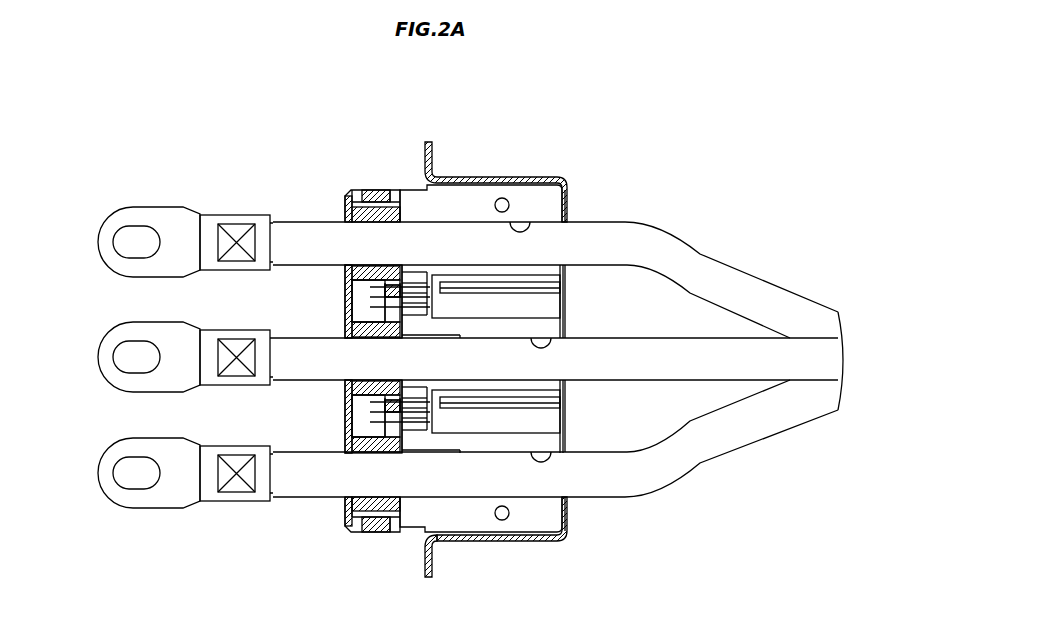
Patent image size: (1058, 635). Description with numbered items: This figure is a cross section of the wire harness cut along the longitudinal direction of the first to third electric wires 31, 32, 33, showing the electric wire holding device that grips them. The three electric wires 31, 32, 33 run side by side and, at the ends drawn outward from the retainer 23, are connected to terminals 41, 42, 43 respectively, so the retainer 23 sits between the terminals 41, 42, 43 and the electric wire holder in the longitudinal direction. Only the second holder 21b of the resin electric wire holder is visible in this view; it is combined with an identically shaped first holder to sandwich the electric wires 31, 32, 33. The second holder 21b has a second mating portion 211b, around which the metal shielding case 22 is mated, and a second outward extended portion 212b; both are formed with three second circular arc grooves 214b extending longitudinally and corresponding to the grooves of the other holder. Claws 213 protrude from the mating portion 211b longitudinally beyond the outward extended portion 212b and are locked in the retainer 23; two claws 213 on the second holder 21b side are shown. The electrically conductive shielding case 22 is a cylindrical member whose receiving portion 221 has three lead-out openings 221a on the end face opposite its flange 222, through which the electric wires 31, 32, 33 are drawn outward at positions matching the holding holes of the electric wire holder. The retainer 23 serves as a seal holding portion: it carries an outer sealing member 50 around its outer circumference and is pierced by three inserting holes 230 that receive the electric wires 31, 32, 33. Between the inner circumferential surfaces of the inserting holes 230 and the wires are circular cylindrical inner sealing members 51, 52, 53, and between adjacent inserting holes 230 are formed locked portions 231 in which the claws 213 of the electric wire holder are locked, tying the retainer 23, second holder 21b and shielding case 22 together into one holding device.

The shielding case 22 is at (438, 145).
The second outward extended portion 212b is at (418, 200).
The second circular arc grooves 214b is at (525, 228).
The second mating portion 211b is at (550, 205).
The lead-out openings 221a is at (572, 218).
The inserting holes 230 is at (343, 218).
The terminal 41 is at (108, 232).
The terminal 42 is at (108, 348).
The terminal 43 is at (108, 468).
The inner sealing member 51 is at (352, 273).
The inner sealing member 52 is at (352, 386).
The locked portions 231 is at (380, 290).
The claws 213 is at (370, 298).
The first electric wire 31 is at (830, 327).
The second electric wire 32 is at (830, 355).
The third electric wire 33 is at (830, 398).
The inner sealing member 53 is at (345, 525).
The outer sealing member 50 is at (368, 527).
The retainer 23 is at (398, 528).
The flange 222 is at (432, 567).
The receiving portion 221 is at (507, 540).
The second holder 21b is at (549, 516).